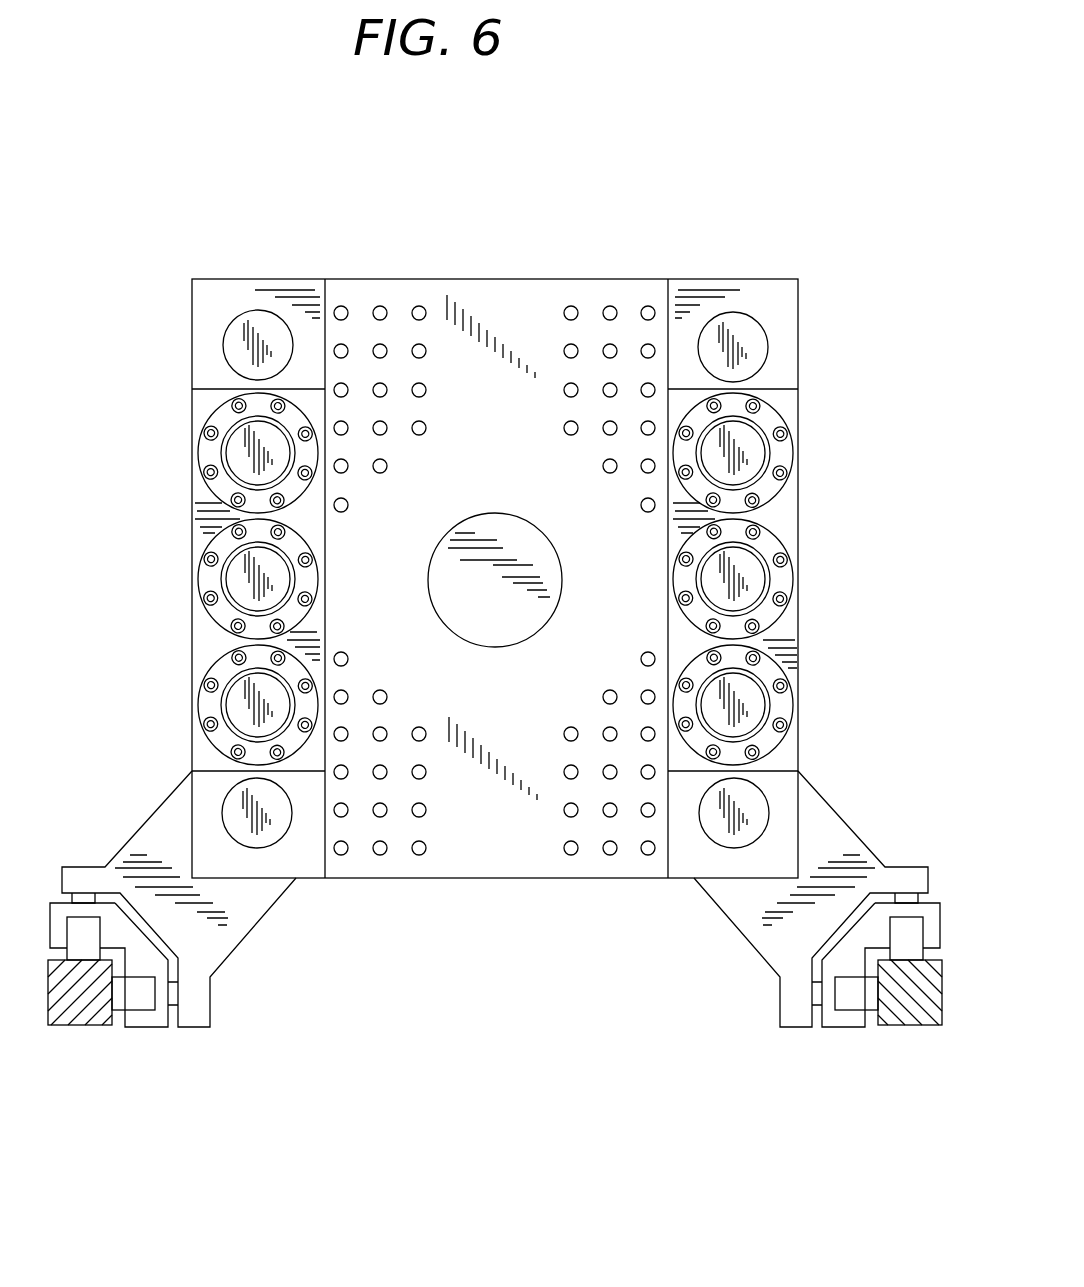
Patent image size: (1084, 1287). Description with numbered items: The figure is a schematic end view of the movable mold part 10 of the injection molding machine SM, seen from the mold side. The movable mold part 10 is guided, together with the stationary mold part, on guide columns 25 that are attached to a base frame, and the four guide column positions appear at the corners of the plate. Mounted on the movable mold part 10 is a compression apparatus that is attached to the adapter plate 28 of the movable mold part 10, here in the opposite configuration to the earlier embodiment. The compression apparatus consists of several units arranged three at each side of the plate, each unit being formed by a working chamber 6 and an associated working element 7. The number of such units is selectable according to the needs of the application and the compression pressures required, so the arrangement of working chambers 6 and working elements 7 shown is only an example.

The movable mold part 10 is at (703, 277).
The guide columns 25 is at (252, 325).
The working chamber 6 is at (247, 573).
The working element 7 is at (230, 413).
The adapter plate 28 is at (468, 863).
The injection molding machine SM is at (225, 953).